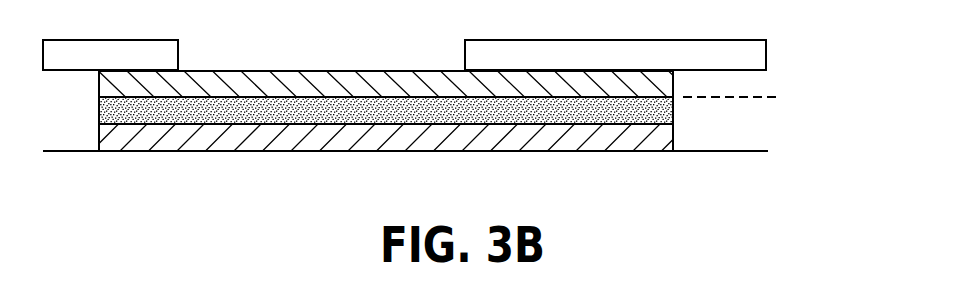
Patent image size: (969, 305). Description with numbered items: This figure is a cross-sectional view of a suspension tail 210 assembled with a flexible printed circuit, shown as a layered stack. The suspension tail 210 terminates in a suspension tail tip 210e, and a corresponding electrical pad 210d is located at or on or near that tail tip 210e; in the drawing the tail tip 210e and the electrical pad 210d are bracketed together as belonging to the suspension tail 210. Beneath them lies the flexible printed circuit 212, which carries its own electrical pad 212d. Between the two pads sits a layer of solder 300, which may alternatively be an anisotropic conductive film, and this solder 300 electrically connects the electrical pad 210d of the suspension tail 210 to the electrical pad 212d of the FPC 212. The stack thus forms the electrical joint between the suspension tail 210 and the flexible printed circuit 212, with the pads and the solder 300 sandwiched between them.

The suspension tail 210 is at (448, 48).
The suspension tail tip 210e is at (116, 53).
The electrical pad 210d is at (263, 80).
The solder 300 is at (98, 112).
The flexible printed circuit 212 is at (447, 166).
The electrical pad of the FPC 212d is at (635, 140).